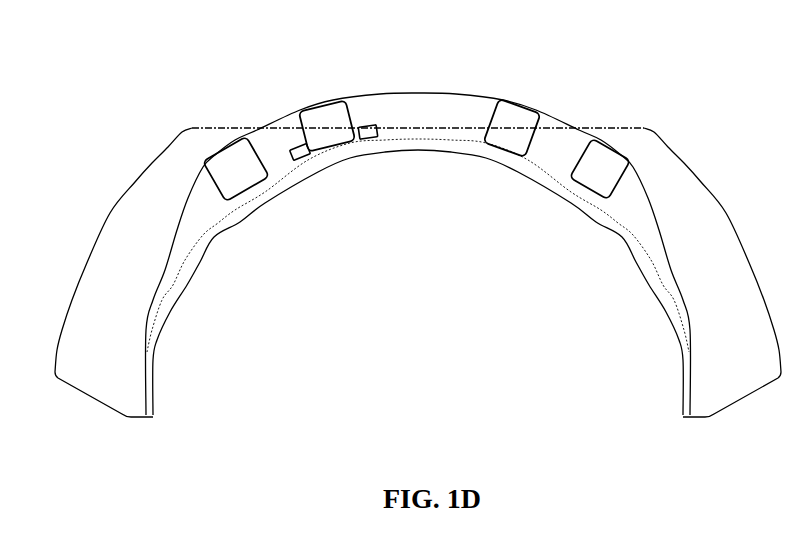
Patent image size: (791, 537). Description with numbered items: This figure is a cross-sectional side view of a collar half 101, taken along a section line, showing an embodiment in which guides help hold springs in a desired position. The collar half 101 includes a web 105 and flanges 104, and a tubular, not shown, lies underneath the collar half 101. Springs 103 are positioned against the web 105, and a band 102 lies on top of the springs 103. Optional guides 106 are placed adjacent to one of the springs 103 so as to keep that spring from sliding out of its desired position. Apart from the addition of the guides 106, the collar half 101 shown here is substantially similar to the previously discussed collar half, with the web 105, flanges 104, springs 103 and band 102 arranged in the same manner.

The collar half 101 is at (86, 73).
The band 102 is at (474, 79).
The springs 103 is at (307, 106).
The flanges 104 is at (696, 150).
The web 105 is at (416, 123).
The guides 106 is at (369, 154).